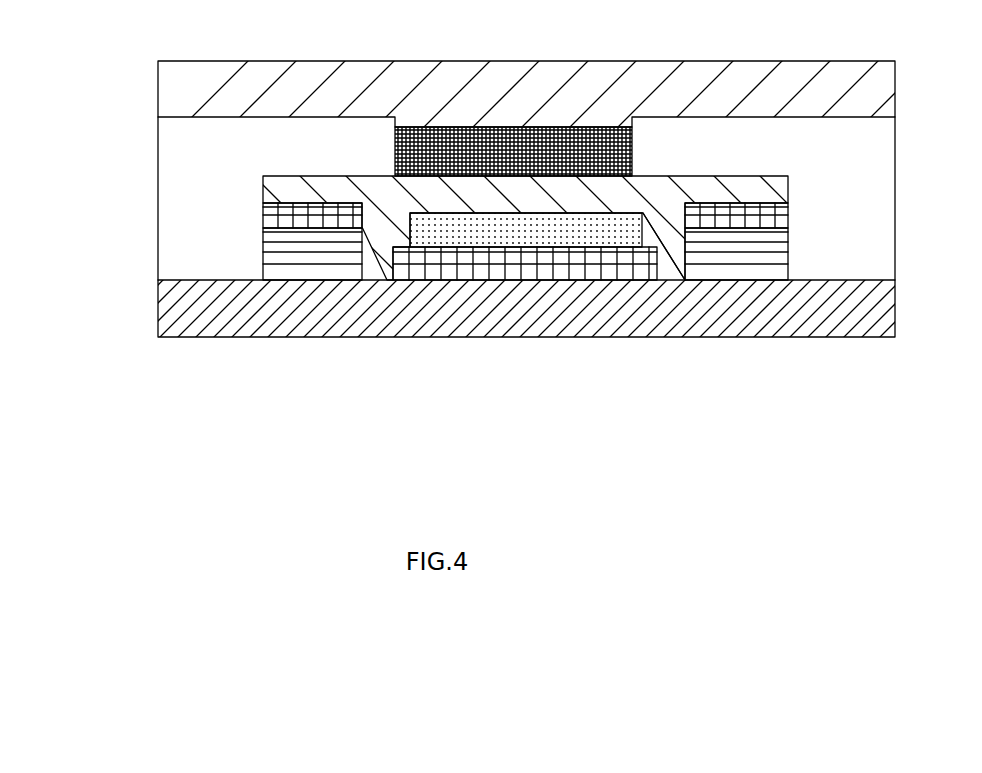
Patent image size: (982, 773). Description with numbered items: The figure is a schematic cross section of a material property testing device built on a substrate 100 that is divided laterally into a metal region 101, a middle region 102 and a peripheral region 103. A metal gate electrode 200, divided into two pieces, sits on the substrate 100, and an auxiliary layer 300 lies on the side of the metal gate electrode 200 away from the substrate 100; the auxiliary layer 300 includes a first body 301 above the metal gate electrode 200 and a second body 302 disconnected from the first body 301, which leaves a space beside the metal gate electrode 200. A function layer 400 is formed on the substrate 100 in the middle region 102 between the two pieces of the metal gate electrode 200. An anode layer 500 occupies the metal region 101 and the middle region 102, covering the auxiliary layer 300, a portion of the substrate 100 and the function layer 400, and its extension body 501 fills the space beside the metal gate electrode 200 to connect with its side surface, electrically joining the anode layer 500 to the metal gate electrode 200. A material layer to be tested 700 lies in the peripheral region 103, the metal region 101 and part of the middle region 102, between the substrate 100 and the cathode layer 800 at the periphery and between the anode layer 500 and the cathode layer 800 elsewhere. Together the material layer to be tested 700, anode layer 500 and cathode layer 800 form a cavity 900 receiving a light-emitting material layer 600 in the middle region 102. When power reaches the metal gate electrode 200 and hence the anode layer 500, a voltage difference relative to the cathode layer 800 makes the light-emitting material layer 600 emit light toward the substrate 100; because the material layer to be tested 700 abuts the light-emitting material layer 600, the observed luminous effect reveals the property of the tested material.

The substrate 100 is at (180, 313).
The metal region 101 is at (686, 380).
The middle region 102 is at (367, 337).
The peripheral region 103 is at (785, 337).
The metal gate electrode 200 is at (262, 233).
The auxiliary layer 300 is at (440, 328).
The first body 301 is at (298, 218).
The second body 302 is at (413, 260).
The function layer 400 is at (565, 235).
The anode layer 500 is at (262, 183).
The extension body 501 is at (670, 268).
The light-emitting material layer 600 is at (505, 137).
The material layer to be tested 700 is at (190, 148).
The cathode layer 800 is at (172, 82).
The cavity 900 is at (632, 152).